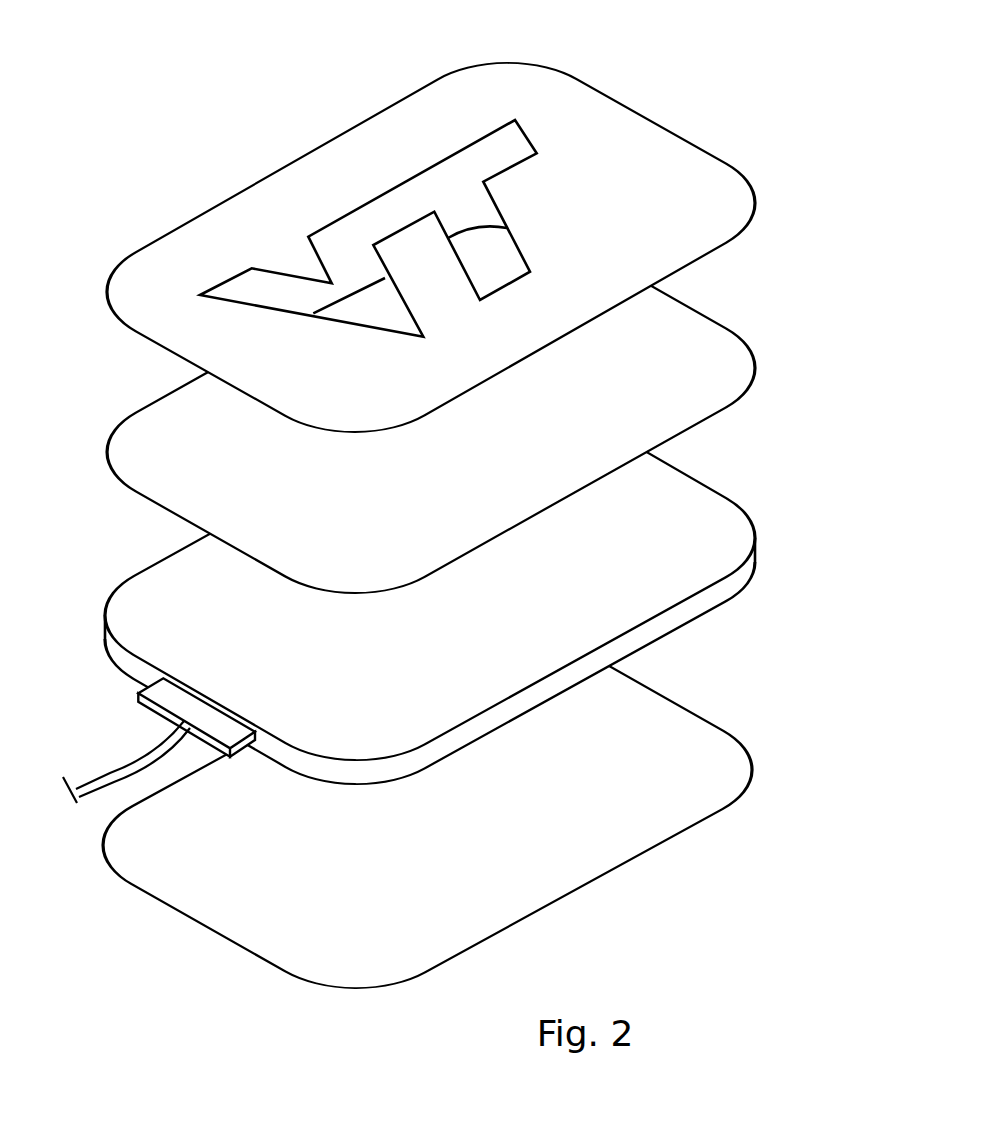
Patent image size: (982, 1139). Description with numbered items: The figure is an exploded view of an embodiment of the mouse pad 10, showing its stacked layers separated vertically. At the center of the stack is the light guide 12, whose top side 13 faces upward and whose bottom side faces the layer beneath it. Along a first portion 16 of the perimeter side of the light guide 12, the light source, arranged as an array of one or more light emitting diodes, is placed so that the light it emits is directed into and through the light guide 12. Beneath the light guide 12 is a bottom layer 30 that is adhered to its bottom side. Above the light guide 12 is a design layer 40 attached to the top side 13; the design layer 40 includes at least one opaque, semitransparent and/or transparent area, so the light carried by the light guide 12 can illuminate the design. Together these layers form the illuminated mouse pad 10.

The mouse pad 10 is at (670, 897).
The light guide 12 is at (768, 490).
The top side 13 is at (692, 508).
The first portion 16 is at (142, 657).
The bottom layer 30 is at (727, 730).
The design layer 40 is at (343, 134).